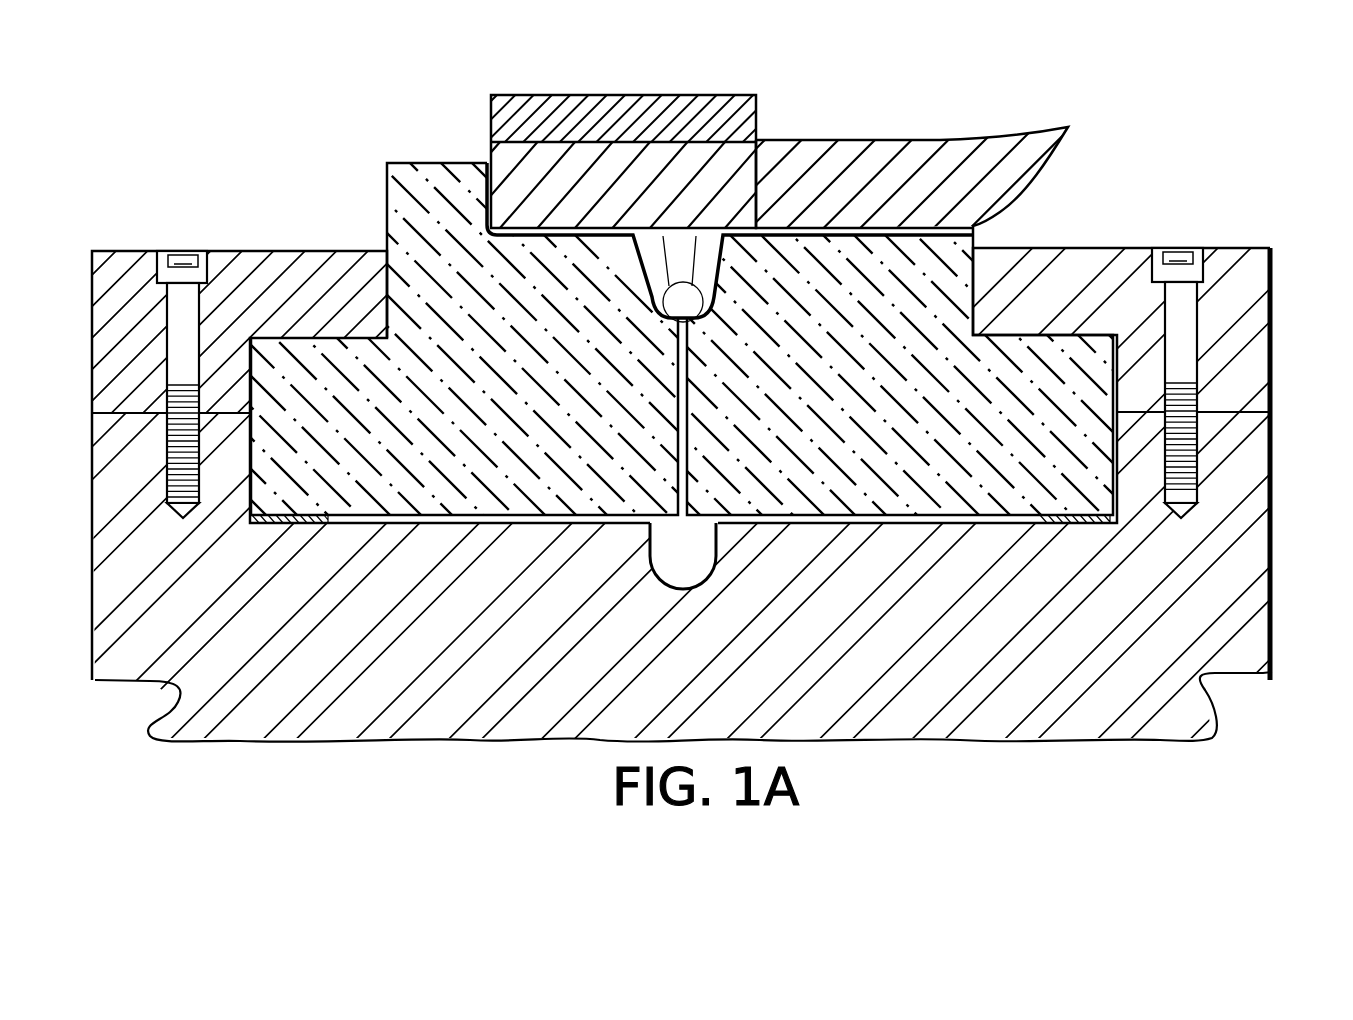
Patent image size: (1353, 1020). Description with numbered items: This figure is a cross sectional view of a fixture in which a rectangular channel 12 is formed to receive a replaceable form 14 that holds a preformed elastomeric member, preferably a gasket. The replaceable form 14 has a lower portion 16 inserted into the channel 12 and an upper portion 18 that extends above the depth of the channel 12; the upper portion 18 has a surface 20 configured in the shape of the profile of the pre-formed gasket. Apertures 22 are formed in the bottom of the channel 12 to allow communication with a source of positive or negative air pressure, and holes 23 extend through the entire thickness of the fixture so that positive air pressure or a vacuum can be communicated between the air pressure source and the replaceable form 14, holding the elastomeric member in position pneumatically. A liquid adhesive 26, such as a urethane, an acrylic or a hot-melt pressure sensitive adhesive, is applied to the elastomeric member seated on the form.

The channel 12 is at (1120, 377).
The replaceable form 14 is at (985, 237).
The lower portion 16 is at (1085, 523).
The upper portion 18 is at (385, 205).
The surface 20 is at (975, 226).
The apertures 22 is at (667, 553).
The holes 23 is at (677, 423).
The liquid adhesive 26 is at (614, 95).